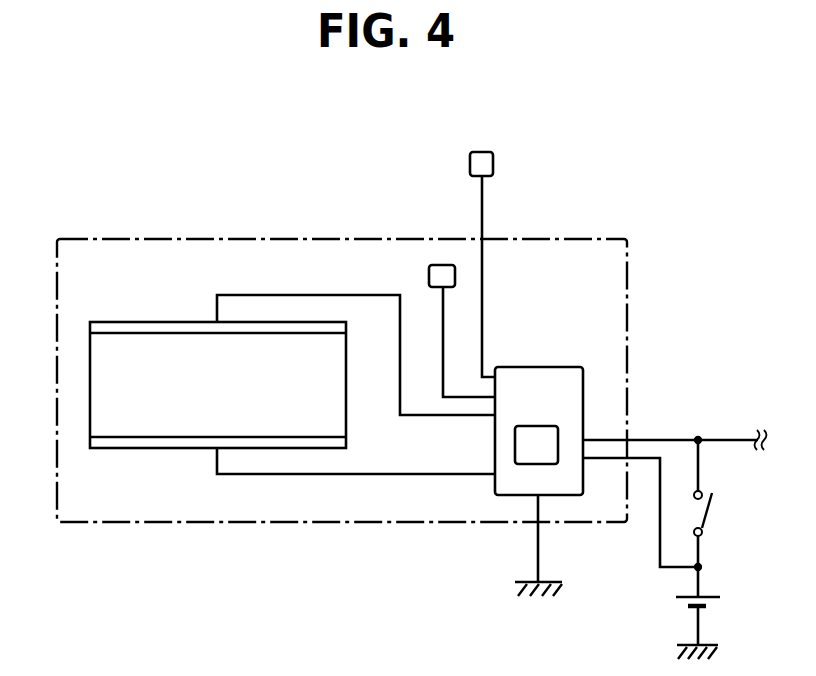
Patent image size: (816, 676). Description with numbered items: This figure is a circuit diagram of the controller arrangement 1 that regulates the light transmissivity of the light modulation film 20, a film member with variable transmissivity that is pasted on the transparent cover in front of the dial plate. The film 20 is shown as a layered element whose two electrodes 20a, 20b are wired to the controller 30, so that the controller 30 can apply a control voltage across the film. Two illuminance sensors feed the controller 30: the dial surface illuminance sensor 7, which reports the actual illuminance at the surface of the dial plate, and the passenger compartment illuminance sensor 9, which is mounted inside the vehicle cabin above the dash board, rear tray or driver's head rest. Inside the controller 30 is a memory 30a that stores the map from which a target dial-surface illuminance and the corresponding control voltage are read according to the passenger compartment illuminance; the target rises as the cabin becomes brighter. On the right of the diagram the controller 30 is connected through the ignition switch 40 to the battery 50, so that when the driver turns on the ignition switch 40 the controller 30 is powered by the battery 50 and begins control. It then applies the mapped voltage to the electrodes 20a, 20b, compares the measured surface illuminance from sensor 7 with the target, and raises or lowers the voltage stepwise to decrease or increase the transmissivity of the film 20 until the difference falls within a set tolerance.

The electrolytic capacitor device / unit 1 is at (83, 239).
The light modulation film 20 is at (130, 321).
The electrode 20a is at (199, 324).
The electrode 20b is at (176, 448).
The dial surface illuminance sensor 7 is at (443, 265).
The passenger compartment illuminance sensor 9 is at (493, 160).
The controller 30 is at (556, 367).
The memory 30a is at (558, 437).
The ignition switch 40 is at (716, 505).
The battery 50 is at (712, 597).